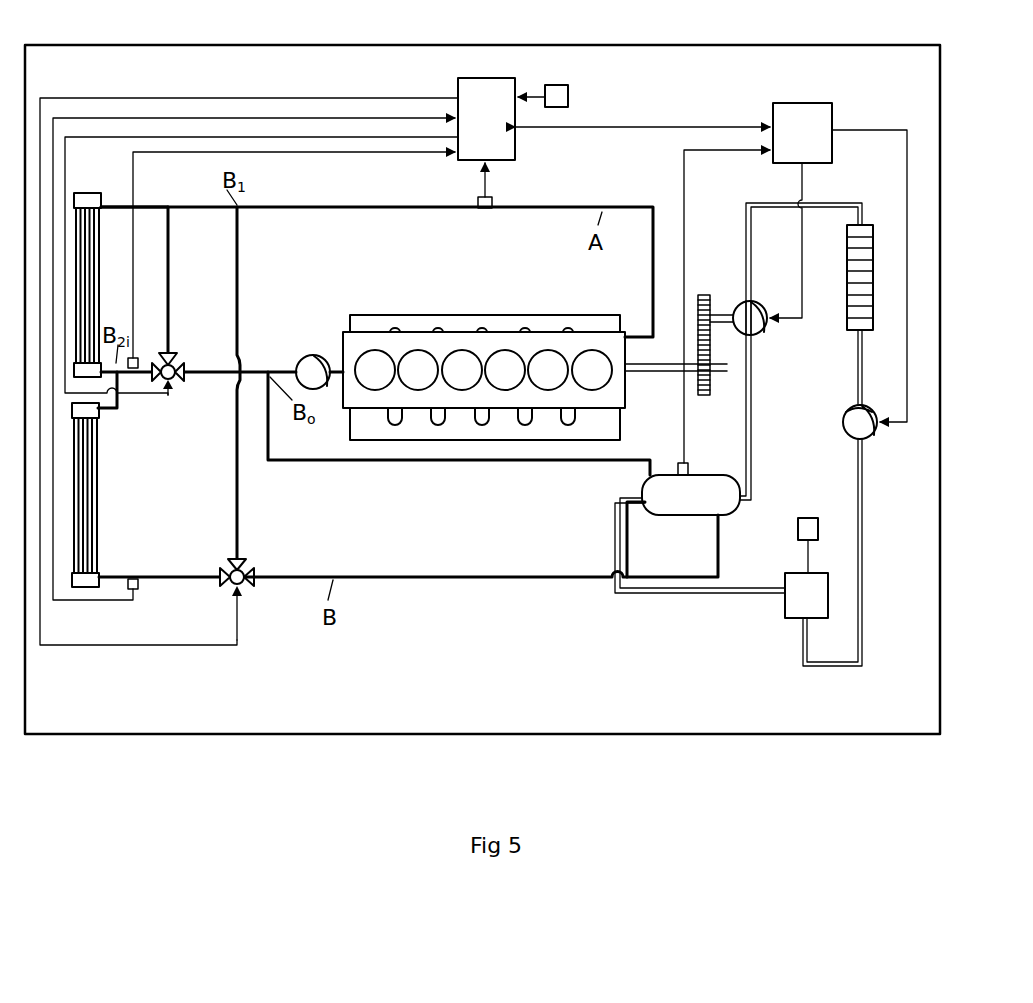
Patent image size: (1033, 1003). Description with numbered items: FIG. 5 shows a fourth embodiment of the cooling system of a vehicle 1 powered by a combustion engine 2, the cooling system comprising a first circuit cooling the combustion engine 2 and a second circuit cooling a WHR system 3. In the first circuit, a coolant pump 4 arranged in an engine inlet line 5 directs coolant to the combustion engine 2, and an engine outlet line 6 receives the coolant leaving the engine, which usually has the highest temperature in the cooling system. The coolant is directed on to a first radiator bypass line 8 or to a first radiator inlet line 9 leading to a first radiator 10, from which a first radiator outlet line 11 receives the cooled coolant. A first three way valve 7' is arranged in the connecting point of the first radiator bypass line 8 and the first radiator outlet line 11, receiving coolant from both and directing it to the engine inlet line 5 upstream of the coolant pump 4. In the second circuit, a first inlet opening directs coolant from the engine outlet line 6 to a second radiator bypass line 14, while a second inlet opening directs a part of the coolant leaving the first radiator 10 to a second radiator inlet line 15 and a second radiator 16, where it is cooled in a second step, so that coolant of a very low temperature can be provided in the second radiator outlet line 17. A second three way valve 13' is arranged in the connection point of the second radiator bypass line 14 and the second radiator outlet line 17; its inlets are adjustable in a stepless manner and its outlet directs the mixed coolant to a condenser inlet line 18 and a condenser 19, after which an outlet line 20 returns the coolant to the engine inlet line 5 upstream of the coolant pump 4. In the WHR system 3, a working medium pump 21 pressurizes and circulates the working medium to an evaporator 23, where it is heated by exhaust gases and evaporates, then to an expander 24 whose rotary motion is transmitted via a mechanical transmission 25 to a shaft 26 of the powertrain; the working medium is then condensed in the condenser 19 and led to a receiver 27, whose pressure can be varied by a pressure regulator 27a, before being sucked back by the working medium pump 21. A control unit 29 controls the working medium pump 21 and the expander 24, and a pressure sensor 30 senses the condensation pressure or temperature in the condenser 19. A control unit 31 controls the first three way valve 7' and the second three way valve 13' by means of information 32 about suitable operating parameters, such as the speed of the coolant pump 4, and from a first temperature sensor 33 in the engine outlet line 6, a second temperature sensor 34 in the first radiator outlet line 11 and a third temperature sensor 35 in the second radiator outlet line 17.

The vehicle 1 is at (147, 88).
The combustion engine 2 is at (515, 318).
The WHR system 3 is at (863, 510).
The coolant pump 4 is at (312, 370).
The engine inlet line 5 is at (255, 370).
The engine outlet line 6 is at (417, 210).
The first three way valve 7' is at (180, 360).
The first radiator bypass line 8 is at (170, 260).
The first radiator inlet line 9 is at (152, 207).
The first radiator 10 is at (90, 193).
The first radiator outlet line 11 is at (128, 375).
The second three way valve 13' is at (252, 588).
The second radiator bypass line 14 is at (240, 280).
The second radiator inlet line 15 is at (117, 410).
The second radiator 16 is at (83, 505).
The second radiator outlet line 17 is at (117, 575).
The condenser inlet line 18 is at (415, 580).
The condenser 19 is at (703, 495).
The outlet line 20 is at (495, 465).
The working medium pump 21 is at (862, 426).
The evaporator 23 is at (860, 280).
The expander 24 is at (755, 322).
The mechanical transmission 25 is at (706, 295).
The shaft 26 is at (647, 372).
The receiver 27 is at (805, 612).
The pressure regulator 27a is at (812, 516).
The control unit 29 is at (820, 117).
The pressure sensor 30 is at (688, 468).
The control unit 31 is at (489, 97).
The information 32 is at (568, 95).
The first temperature sensor 33 is at (490, 200).
The second temperature sensor 34 is at (135, 360).
The third temperature sensor 35 is at (135, 590).